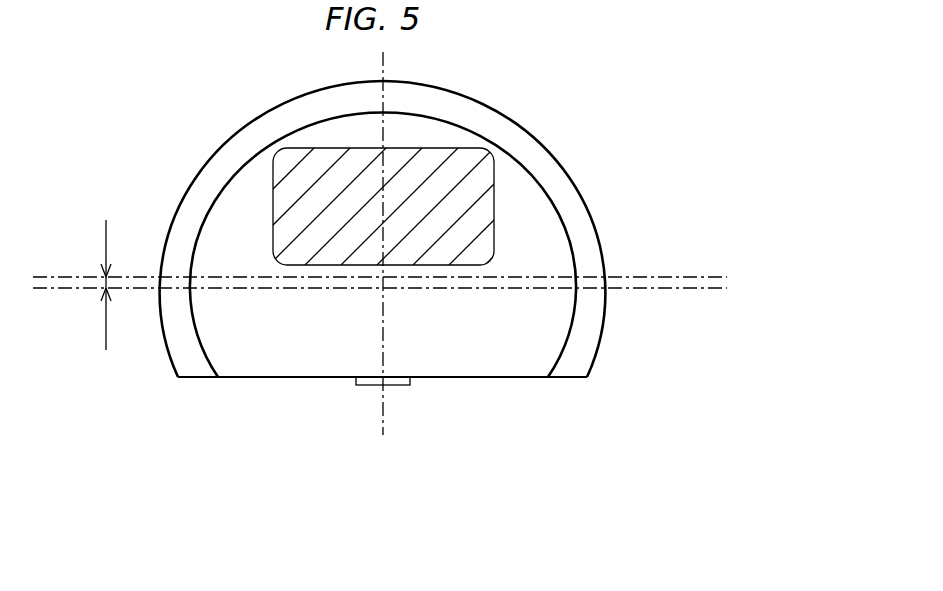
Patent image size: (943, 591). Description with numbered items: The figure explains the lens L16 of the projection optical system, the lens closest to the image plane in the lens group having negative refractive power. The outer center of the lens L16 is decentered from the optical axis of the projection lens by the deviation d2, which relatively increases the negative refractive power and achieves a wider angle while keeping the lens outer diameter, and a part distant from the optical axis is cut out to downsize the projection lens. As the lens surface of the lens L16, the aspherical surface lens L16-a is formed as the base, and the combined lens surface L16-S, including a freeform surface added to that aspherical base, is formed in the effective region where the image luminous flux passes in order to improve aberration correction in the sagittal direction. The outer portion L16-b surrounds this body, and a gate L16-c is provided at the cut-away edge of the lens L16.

The lens L16 is at (382, 356).
The aspherical surface lens L16-a is at (527, 227).
The lens flange portion (outer portion) L16-b is at (585, 348).
The gate L16-c is at (363, 386).
The combined lens surface L16-S is at (278, 152).
The deviation between outer center of lens and optical axis d2 is at (76, 285).